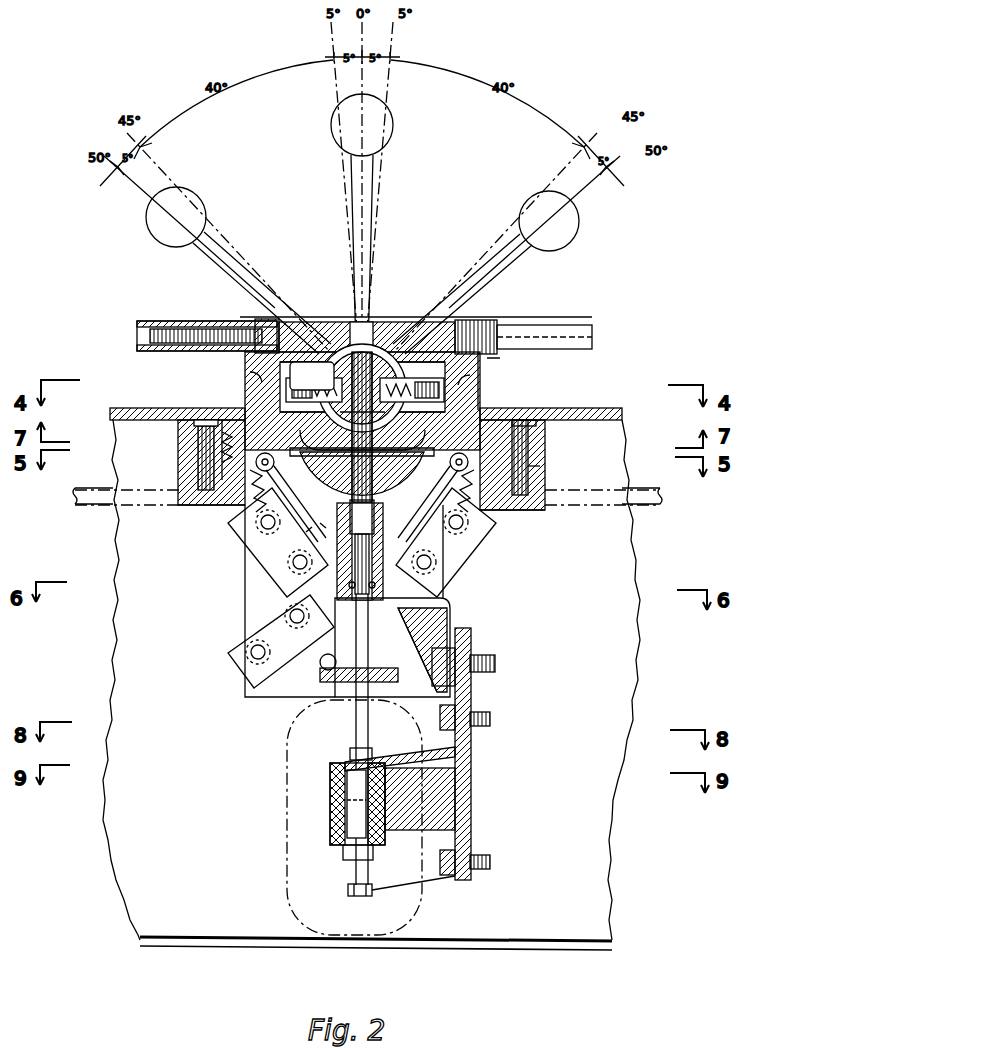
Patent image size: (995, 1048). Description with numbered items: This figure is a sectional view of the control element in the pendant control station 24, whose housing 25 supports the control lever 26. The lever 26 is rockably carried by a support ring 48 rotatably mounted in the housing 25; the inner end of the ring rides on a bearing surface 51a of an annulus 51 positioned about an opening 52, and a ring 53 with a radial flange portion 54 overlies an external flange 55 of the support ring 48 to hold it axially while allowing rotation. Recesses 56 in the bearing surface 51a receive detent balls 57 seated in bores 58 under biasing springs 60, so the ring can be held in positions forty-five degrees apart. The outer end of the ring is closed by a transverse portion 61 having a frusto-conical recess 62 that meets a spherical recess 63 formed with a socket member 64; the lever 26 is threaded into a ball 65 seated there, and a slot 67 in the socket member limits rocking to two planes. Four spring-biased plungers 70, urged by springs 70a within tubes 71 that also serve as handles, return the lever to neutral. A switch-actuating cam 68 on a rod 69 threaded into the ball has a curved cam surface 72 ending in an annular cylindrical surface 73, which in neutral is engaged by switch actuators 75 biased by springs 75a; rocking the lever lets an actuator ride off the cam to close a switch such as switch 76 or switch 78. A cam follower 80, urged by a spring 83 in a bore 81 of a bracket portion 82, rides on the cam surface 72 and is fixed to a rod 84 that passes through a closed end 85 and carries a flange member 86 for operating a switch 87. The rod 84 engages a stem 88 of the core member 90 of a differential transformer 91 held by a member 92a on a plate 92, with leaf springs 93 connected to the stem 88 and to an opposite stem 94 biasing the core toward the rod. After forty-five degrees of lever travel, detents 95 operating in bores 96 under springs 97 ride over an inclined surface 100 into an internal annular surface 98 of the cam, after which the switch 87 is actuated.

The pendant control station 24 is at (144, 532).
The housing 25 is at (557, 408).
The control lever 26 is at (372, 217).
The support ring 48 is at (340, 350).
The annulus 51 is at (180, 490).
The bearing surface 51a is at (196, 470).
The opening 52 is at (506, 512).
The ring 53 is at (198, 410).
The radial flange portion 54 is at (226, 410).
The external flange 55 is at (204, 408).
The recesses 56 is at (532, 464).
The detent balls 57 is at (530, 446).
The bores 58 is at (218, 450).
The biasing spring 60 is at (196, 432).
The transverse portion 61 is at (405, 387).
The frusto-conically shaped recess 62 is at (462, 318).
The spherical recess 63 is at (302, 376).
The socket member 64 is at (458, 450).
The ball 65 is at (392, 322).
The slot 67 is at (362, 415).
The switch-actuating cam 68 is at (344, 484).
The rod 69 is at (362, 388).
The spring-biased plungers 70 is at (330, 322).
The springs 70a is at (262, 318).
The tubes 71 is at (161, 320).
The cam surface 72 is at (382, 502).
The annular cylindrical surface 73 is at (286, 448).
The switch actuators 75 is at (290, 466).
The springs 75a is at (246, 510).
The switch 76 is at (262, 556).
The switch 78 is at (466, 554).
The cam follower 80 is at (376, 516).
The bore 81 is at (350, 581).
The bracket portion 82 is at (382, 612).
The spring 83 is at (374, 581).
The rod 84 is at (370, 650).
The closed end 85 is at (352, 620).
The flange member 86 is at (372, 668).
The switch 87 is at (250, 676).
The stem 88 is at (356, 712).
The core member 90 is at (334, 820).
The differential transformer 91 is at (322, 773).
The plate 92 is at (471, 804).
The member 92a is at (460, 772).
The leaf springs 93 is at (384, 756).
The stem 94 is at (350, 876).
The spring-biased detents 95 is at (248, 372).
The bores 96 is at (292, 414).
The springs 97 is at (430, 386).
The internal annular surface 98 is at (362, 435).
The inclined surface 100 is at (380, 440).